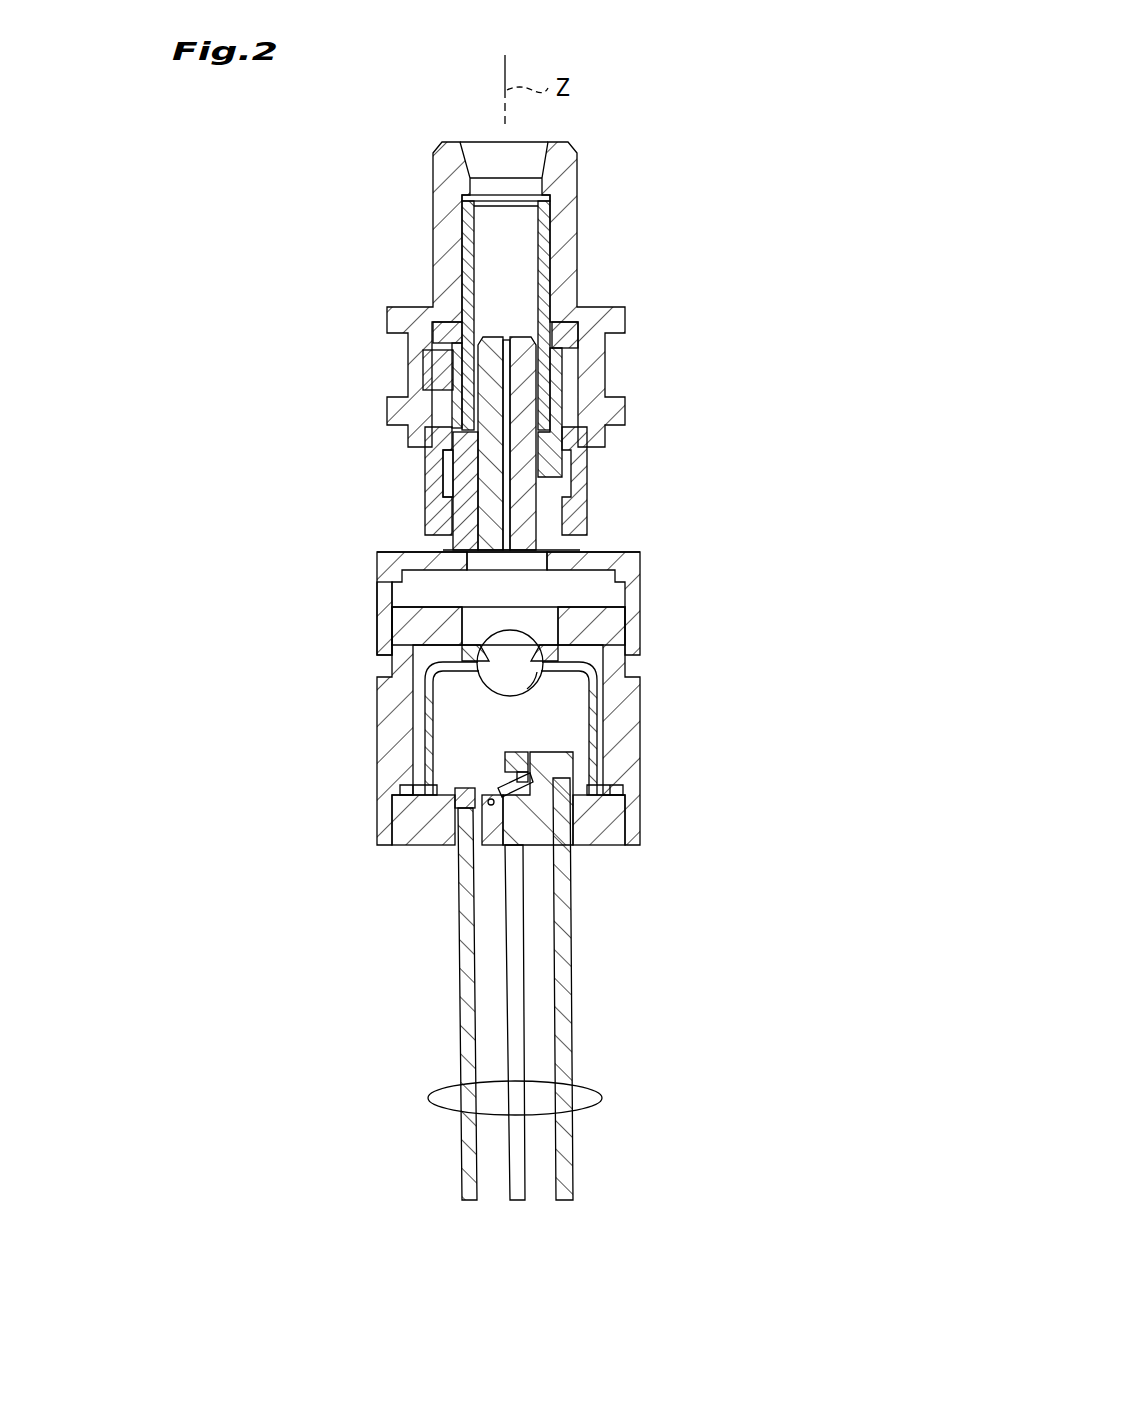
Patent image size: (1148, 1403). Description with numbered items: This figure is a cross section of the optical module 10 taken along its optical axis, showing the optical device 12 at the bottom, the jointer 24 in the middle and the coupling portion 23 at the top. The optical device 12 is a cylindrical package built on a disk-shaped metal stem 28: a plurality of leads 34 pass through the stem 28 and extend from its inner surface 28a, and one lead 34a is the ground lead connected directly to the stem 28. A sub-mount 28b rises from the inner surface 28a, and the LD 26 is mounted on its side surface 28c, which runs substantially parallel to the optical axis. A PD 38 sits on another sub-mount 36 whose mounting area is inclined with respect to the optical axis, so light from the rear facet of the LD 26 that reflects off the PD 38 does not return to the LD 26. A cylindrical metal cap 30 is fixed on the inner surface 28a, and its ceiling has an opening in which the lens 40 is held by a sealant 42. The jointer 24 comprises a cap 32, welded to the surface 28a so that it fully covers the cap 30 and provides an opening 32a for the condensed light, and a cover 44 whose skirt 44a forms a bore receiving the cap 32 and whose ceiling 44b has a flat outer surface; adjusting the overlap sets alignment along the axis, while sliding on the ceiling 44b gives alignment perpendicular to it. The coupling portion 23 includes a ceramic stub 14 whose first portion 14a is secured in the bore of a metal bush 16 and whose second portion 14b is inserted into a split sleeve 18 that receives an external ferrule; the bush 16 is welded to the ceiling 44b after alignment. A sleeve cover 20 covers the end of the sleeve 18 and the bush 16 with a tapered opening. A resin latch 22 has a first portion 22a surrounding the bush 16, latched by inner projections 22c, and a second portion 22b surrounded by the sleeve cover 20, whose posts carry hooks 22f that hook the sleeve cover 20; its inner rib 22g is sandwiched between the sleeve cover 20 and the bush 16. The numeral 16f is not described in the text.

The optical module 10 is at (633, 100).
The optical device 12 is at (345, 712).
The stub 14 is at (303, 365).
The first portion of the stub 14a is at (473, 470).
The second portion of the stub 14b is at (490, 373).
The bush 16 is at (541, 378).
The ferrule flange slot 16f is at (428, 480).
The sleeve 18 is at (547, 246).
The sleeve cover 20 is at (567, 203).
The latch 22 is at (730, 417).
The first portion of the latch 22a is at (600, 468).
The second portion of the latch 22b is at (565, 408).
The projections 22c is at (425, 508).
The hook 22f is at (450, 367).
The inner rib 22g is at (575, 324).
The coupling portion 23 is at (790, 541).
The jointer 24 is at (730, 547).
The LD 26 is at (523, 762).
The stem 28 is at (612, 817).
The inner surface of the stem 28a is at (612, 817).
The sub-mount 28b is at (550, 777).
The side surface of the sub-mount 28c is at (533, 780).
The cap 30 is at (583, 725).
The cap of the jointer 32 is at (632, 686).
The opening 32a is at (535, 627).
The leads 34 is at (595, 1105).
The ground lead 34a is at (563, 1002).
The sub-mount for the PD 36 is at (507, 810).
The PD 38 is at (453, 800).
The lens 40 is at (523, 655).
The sealant 42 is at (460, 653).
The cover 44 is at (388, 557).
The skirt 44a is at (392, 596).
The ceiling 44b is at (636, 560).